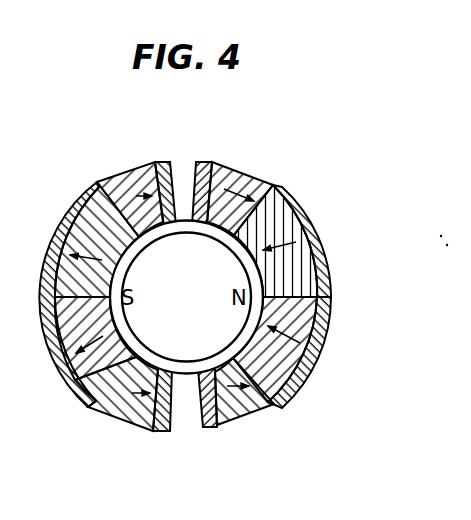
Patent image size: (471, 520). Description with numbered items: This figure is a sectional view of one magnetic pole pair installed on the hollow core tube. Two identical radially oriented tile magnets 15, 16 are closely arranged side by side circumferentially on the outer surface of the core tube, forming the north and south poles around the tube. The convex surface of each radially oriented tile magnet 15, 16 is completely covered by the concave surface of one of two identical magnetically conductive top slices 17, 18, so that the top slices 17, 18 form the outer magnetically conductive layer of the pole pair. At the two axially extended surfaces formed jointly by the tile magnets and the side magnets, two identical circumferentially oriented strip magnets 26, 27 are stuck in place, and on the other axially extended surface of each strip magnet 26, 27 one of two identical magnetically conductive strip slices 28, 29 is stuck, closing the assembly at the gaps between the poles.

The radially oriented tile magnet 15 is at (308, 208).
The radially oriented tile magnet 16 is at (310, 367).
The magnetically conductive top slice 17 is at (285, 179).
The magnetically conductive top slice 18 is at (279, 408).
The circumferentially oriented strip magnet 26 is at (209, 162).
The circumferentially oriented strip magnet 27 is at (232, 412).
The magnetically conductive strip slice 28 is at (201, 160).
The magnetically conductive strip slice 29 is at (205, 430).